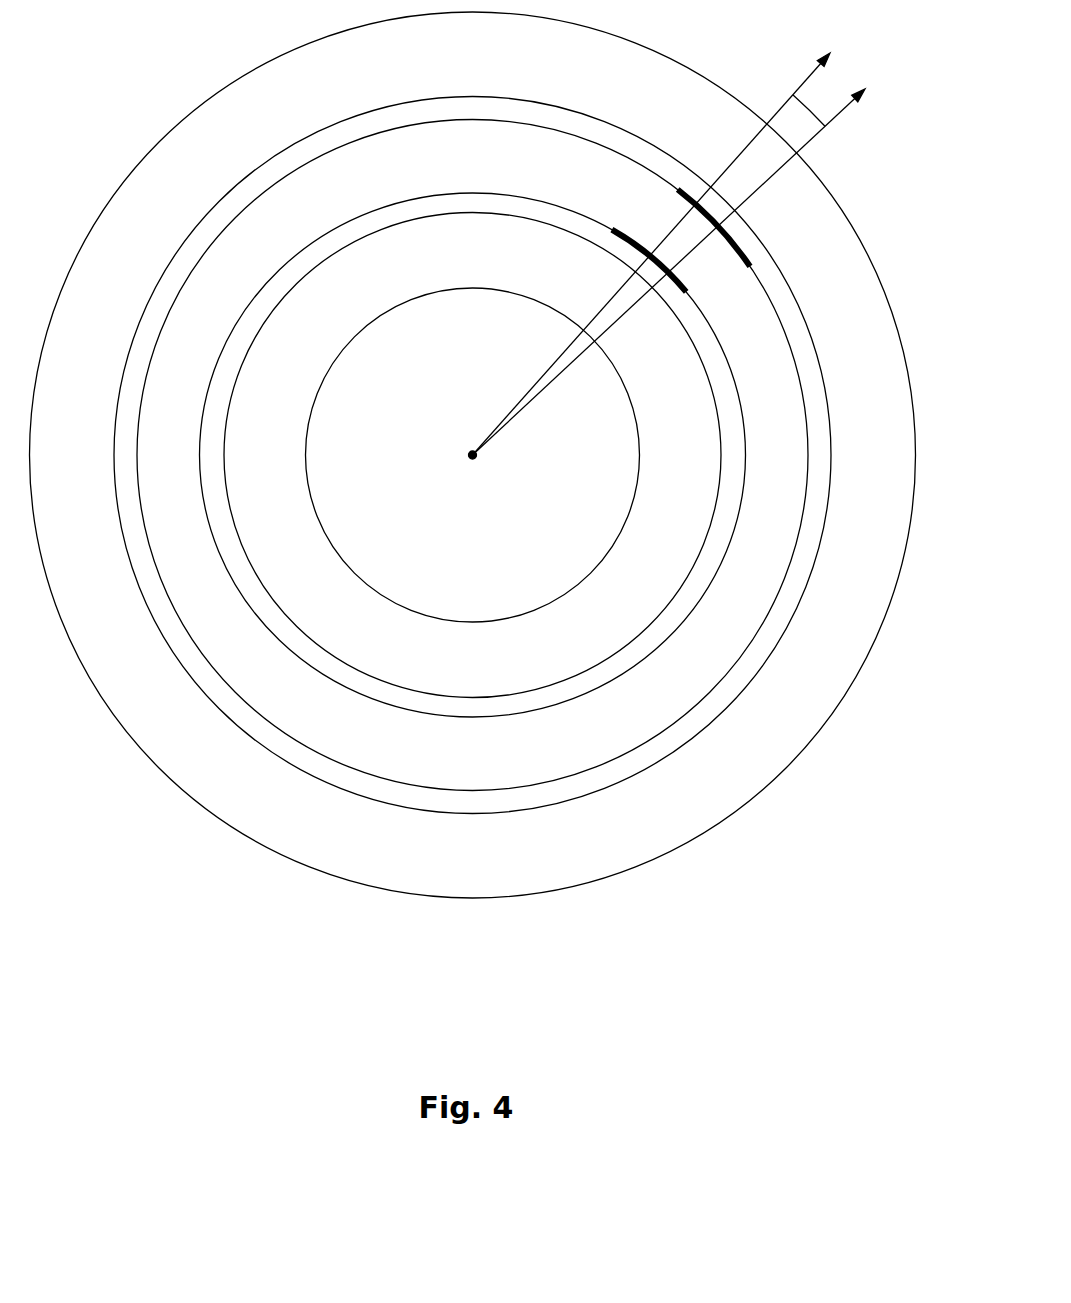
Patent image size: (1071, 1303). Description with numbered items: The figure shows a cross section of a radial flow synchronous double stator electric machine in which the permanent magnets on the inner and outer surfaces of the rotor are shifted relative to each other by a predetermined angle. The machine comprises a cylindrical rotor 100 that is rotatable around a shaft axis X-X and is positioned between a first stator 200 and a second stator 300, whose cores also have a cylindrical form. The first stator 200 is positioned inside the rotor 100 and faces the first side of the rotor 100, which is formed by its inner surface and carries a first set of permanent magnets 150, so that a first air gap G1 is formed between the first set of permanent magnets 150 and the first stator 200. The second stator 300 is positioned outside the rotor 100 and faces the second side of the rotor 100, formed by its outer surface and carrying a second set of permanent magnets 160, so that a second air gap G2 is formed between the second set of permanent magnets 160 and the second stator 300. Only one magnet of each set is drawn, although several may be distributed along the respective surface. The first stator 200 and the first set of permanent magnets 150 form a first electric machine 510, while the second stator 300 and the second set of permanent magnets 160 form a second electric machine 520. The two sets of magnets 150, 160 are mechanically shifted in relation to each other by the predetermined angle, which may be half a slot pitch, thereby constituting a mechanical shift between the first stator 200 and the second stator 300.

The second stator 300 is at (473, 455).
The rotor 100 is at (473, 434).
The first stator 200 is at (473, 432).
The first electric machine 510 is at (472, 378).
The second electric machine 520 is at (523, 453).
The first set of permanent magnets 150 is at (630, 225).
The second set of permanent magnets 160 is at (747, 268).
The first air gap G1 is at (638, 265).
The second air gap G2 is at (722, 222).
The shaft axis X-X is at (472, 472).